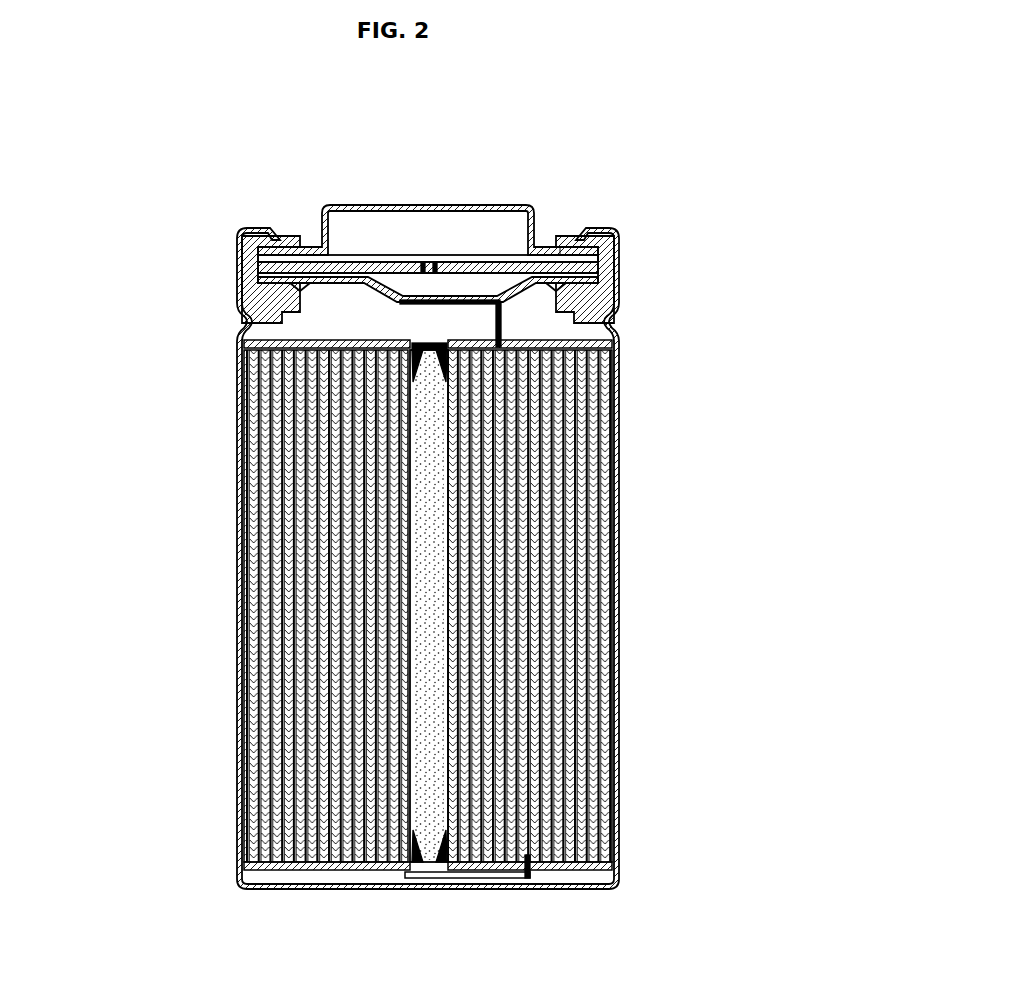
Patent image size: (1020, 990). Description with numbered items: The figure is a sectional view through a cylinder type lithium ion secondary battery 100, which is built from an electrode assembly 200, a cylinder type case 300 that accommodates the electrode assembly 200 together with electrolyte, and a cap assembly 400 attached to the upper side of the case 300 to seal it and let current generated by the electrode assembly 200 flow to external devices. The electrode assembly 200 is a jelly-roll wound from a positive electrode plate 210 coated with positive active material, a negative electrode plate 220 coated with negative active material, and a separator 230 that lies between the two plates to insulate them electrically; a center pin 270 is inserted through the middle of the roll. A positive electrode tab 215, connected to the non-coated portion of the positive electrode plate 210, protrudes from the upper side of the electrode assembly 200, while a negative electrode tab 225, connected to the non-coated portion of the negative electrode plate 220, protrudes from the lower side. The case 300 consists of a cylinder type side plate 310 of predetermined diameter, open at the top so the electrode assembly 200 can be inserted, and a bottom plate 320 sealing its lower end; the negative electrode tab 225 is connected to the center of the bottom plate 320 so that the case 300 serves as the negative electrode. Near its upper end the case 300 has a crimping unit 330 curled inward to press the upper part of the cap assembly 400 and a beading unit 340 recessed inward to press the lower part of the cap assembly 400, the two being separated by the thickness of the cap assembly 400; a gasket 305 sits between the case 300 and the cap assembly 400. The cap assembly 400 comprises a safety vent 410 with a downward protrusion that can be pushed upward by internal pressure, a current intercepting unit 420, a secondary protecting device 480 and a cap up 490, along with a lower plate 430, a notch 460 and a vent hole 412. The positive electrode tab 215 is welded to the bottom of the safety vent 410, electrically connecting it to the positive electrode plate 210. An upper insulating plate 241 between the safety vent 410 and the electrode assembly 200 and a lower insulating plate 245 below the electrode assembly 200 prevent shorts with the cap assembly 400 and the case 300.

The cylinder type lithium ion secondary battery 100 is at (655, 187).
The electrode assembly 200 is at (742, 320).
The positive electrode plate 210 is at (612, 468).
The positive electrode tab 215 is at (617, 324).
The negative electrode plate 220 is at (612, 388).
The negative electrode tab 225 is at (520, 890).
The separator 230 is at (612, 436).
The upper insulating plate 241 is at (612, 340).
The lower insulating plate 245 is at (604, 872).
The center pin 270 is at (385, 864).
The cylinder type case 300 is at (108, 293).
The gasket 305 is at (260, 234).
The cylinder type side plate 310 is at (237, 384).
The bottom plate 320 is at (258, 893).
The crimping unit 330 is at (236, 236).
The beading unit 340 is at (246, 321).
The cap assembly 400 is at (540, 122).
The safety vent 410 is at (360, 248).
The vent hole 412 is at (566, 262).
The current intercepting unit 420 is at (497, 262).
The cap-down 430 is at (455, 290).
The notch 460 is at (424, 262).
The secondary protecting device 480 is at (527, 262).
The cap up 490 is at (350, 258).